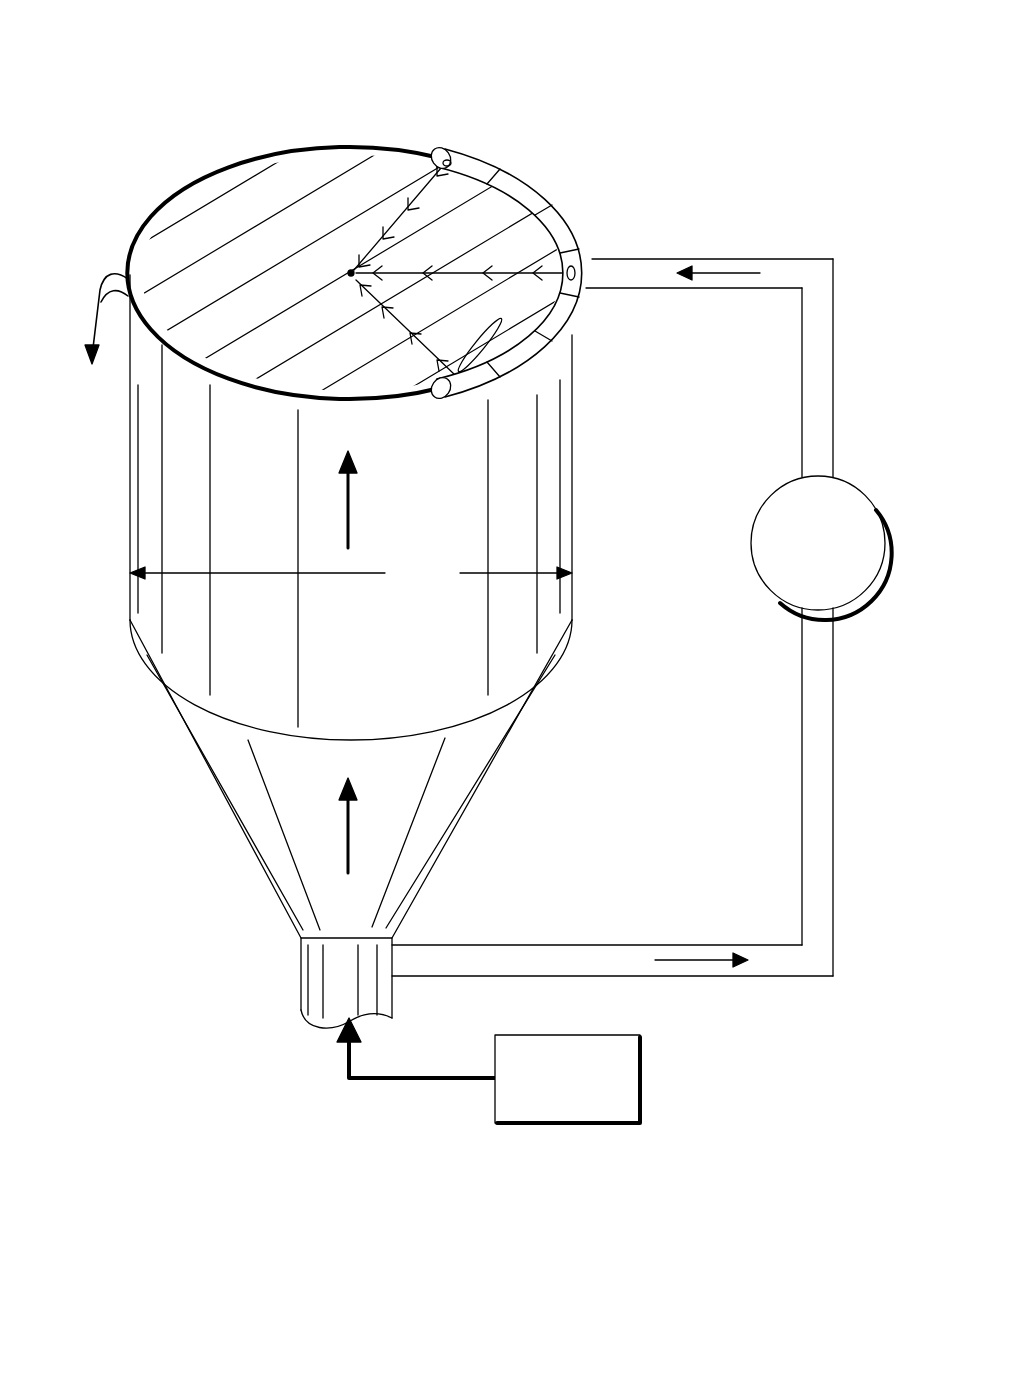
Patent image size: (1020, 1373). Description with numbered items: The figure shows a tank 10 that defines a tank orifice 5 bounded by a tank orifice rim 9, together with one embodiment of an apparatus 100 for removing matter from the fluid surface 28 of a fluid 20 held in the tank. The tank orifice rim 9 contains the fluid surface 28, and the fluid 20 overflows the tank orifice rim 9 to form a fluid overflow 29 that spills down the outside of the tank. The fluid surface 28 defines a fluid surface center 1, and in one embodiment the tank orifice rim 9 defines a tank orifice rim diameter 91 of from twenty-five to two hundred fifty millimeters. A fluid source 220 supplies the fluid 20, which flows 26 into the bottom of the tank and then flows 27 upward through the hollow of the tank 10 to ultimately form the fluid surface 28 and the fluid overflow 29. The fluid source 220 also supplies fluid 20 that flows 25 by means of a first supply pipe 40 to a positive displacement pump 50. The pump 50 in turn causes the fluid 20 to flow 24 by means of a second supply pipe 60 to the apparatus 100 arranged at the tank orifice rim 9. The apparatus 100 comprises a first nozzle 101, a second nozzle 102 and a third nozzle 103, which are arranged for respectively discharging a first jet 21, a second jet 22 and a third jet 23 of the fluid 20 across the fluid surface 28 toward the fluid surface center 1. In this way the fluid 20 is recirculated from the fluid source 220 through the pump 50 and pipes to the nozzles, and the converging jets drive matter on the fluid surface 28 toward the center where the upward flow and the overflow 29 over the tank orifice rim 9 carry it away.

The fluid surface center 1 is at (346, 272).
The tank orifice 5 is at (432, 84).
The tank orifice rim 9 is at (190, 183).
The tank 10 is at (573, 446).
The fluid 20 is at (567, 1083).
The first jet 21 is at (395, 222).
The second jet 22 is at (440, 273).
The third jet 23 is at (430, 350).
The fluid flow to apparatus 24 is at (730, 273).
The fluid flow to pump 25 is at (685, 958).
The fluid flow into tank 26 is at (396, 1053).
The fluid flow through tank 27 is at (369, 662).
The fluid surface 28 is at (273, 177).
The fluid overflow 29 is at (90, 284).
The first supply pipe 40 is at (828, 765).
The positive displacement pump 50 is at (767, 588).
The second supply pipe 60 is at (830, 362).
The tank orifice rim diameter 91 is at (351, 574).
The apparatus for removing matter on a fluid surface 100 is at (591, 280).
The first nozzle 101 is at (483, 157).
The second nozzle 102 is at (586, 228).
The third nozzle 103 is at (476, 384).
The fluid source 220 is at (610, 1079).